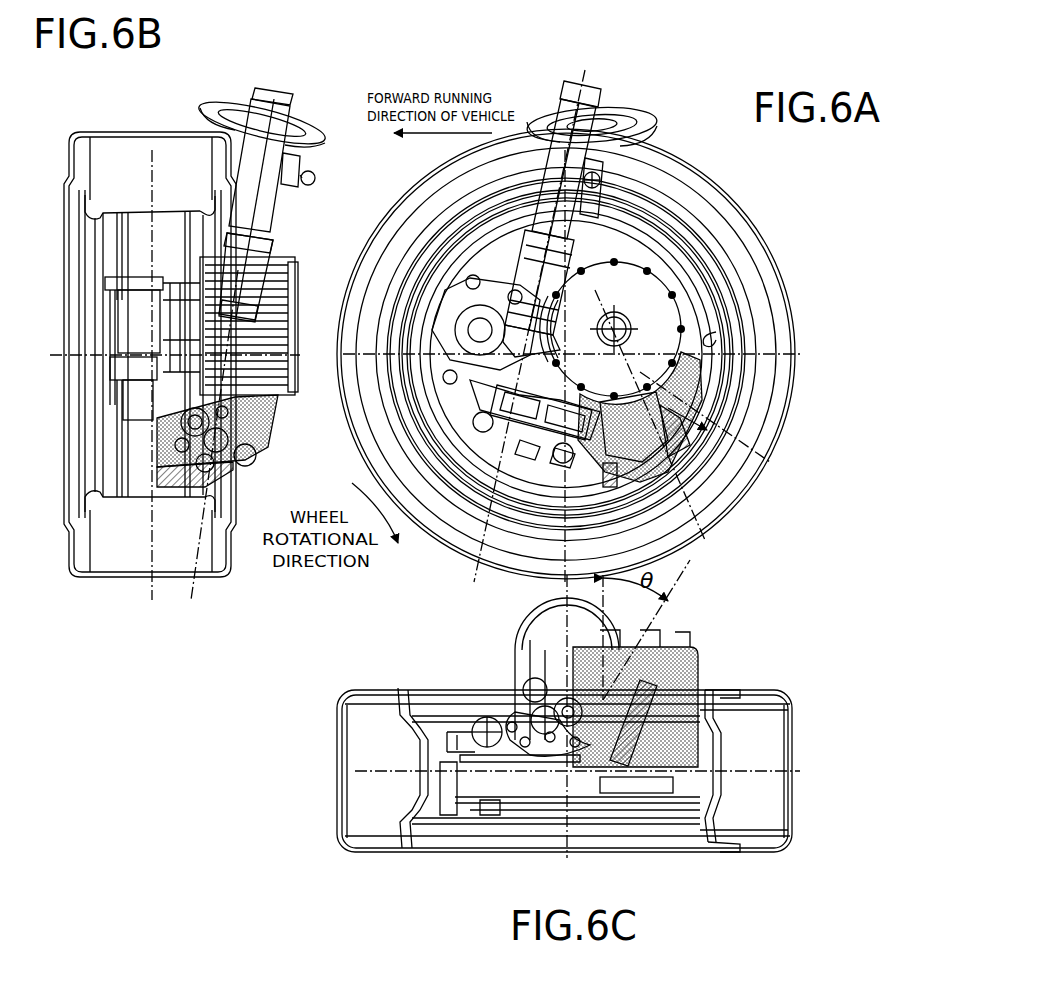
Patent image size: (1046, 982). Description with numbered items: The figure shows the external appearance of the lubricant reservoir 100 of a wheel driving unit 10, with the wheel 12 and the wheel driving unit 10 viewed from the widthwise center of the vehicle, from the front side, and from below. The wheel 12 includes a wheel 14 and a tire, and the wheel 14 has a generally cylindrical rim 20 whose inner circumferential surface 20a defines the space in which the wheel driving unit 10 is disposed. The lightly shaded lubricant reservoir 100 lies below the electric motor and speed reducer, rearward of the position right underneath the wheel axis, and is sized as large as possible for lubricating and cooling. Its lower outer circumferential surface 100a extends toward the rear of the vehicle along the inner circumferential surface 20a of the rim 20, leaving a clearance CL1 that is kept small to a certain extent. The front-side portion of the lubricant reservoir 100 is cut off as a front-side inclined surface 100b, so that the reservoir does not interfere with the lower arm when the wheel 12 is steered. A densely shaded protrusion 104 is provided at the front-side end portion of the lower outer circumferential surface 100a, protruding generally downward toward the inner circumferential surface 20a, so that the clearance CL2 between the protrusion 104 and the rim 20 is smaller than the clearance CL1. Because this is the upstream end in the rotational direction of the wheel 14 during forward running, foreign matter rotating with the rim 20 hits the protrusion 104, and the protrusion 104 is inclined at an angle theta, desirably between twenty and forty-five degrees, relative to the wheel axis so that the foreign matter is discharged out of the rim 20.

In FIG. 6A, the wheel driving unit 10 is at (616, 244).
In FIG. 6B, the wheel driving unit 10 is at (289, 242).
In FIG. 6A, the wheel 12 is at (763, 200).
In FIG. 6B, the wheel 12 is at (125, 117).
In FIG. 6C, the wheel 12 is at (805, 832).
In FIG. 6A, the wheel 14 is at (714, 272).
In FIG. 6B, the wheel 14 is at (88, 456).
In FIG. 6C, the wheel 14 is at (658, 838).
In FIG. 6A, the rim 20 is at (727, 300).
In FIG. 6B, the rim 20 is at (148, 493).
In FIG. 6C, the rim 20 is at (717, 786).
In FIG. 6A, the inner circumferential surface 20a is at (716, 332).
In FIG. 6B, the inner circumferential surface 20a is at (156, 493).
In FIG. 6C, the inner circumferential surface 20a is at (705, 772).
In FIG. 6A, the lubricant reservoir 100 is at (690, 462).
In FIG. 6B, the lubricant reservoir 100 is at (264, 453).
In FIG. 6C, the lubricant reservoir 100 is at (717, 633).
In FIG. 6A, the lower outer circumferential surface 100a is at (690, 398).
In FIG. 6C, the lower outer circumferential surface 100a is at (688, 690).
In FIG. 6A, the front-side inclined surface 100b is at (605, 420).
In FIG. 6B, the front-side inclined surface 100b is at (257, 432).
In FIG. 6C, the front-side inclined surface 100b is at (562, 655).
In FIG. 6A, the protrusion 104 is at (668, 457).
In FIG. 6B, the protrusion 104 is at (205, 495).
In FIG. 6C, the protrusion 104 is at (640, 725).
In FIG. 6A, the clearance CL1 is at (707, 412).
In FIG. 6A, the clearance CL2 is at (690, 532).